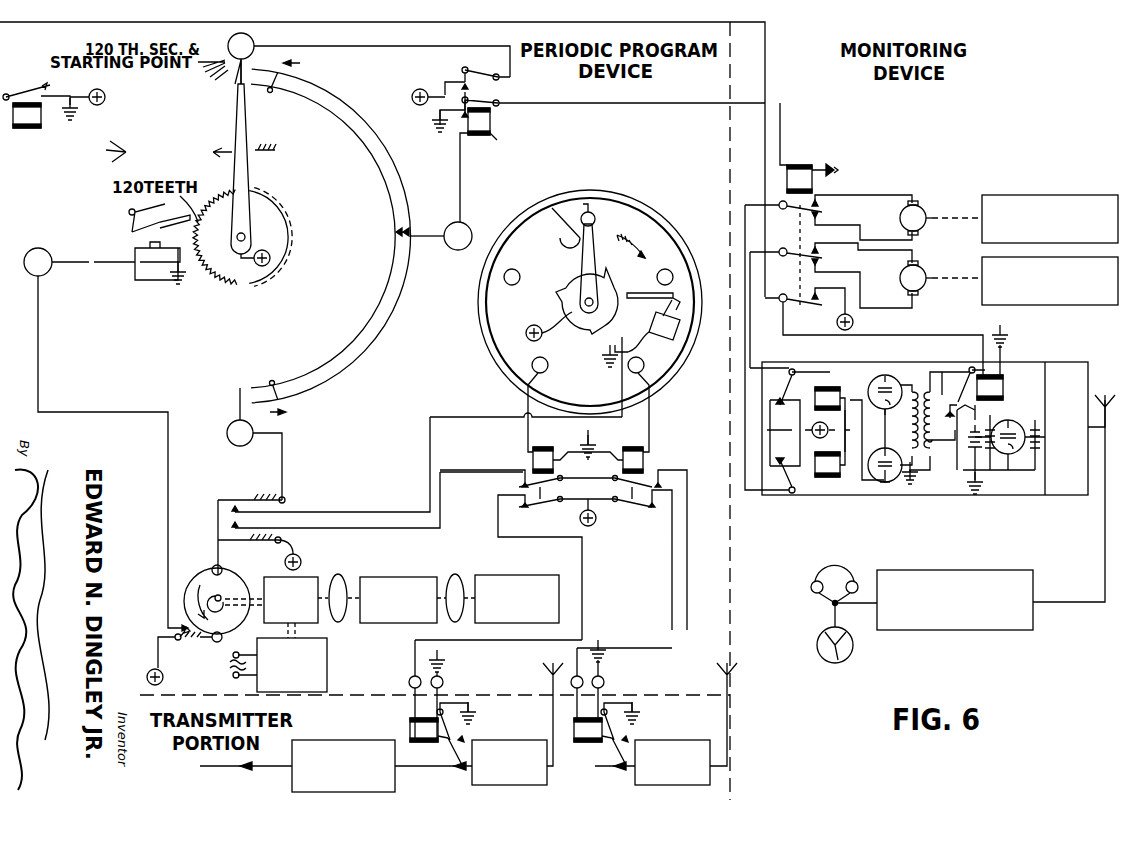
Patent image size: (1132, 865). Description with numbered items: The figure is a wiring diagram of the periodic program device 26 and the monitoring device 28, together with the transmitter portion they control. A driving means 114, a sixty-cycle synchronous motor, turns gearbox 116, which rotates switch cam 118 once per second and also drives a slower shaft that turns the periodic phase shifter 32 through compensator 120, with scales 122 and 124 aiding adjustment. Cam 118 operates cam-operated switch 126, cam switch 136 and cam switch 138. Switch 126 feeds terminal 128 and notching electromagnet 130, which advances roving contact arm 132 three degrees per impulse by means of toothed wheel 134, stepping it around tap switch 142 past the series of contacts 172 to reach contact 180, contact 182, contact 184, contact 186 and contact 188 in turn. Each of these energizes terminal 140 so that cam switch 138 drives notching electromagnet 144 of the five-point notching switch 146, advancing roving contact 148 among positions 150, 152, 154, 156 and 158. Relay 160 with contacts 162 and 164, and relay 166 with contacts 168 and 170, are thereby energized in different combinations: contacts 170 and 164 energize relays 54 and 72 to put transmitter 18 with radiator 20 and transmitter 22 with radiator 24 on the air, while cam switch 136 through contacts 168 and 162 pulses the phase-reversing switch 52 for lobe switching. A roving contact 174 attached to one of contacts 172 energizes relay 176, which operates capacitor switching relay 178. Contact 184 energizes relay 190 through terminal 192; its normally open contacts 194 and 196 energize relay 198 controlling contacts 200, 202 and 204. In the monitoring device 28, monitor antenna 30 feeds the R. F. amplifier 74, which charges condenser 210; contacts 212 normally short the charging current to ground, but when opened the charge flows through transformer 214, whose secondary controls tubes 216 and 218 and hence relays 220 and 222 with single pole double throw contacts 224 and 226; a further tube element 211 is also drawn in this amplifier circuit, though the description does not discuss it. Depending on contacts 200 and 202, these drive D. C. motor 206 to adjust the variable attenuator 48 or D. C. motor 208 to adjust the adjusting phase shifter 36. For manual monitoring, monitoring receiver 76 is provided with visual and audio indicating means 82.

The transmitter 18 is at (490, 740).
The radiator 20 is at (545, 709).
The transmitter 22 is at (664, 740).
The radiator 24 is at (700, 709).
The periodic program device 26 is at (625, 99).
The monitoring device 28 is at (922, 106).
The monitor antenna 30 is at (1095, 332).
The periodic phase shifter 32 is at (506, 575).
The adjusting phase shifter 36 is at (982, 271).
The variable attenuator 48 is at (1024, 195).
The phase-reversing switch 52 is at (368, 740).
The relay 54 is at (435, 736).
The relay 72 is at (621, 705).
The monitoring R. F. amplifier 74 is at (1078, 362).
The monitoring receiver 76 is at (967, 570).
The visual and audio indicating means 82 is at (839, 614).
The driving means 114 is at (257, 684).
The gearbox 116 is at (300, 577).
The switch cam 118 is at (200, 583).
The compensator 120 is at (396, 577).
The scale 122 is at (339, 575).
The scale 124 is at (456, 575).
The cam-operated switch 126 is at (179, 656).
The terminal 128 is at (106, 439).
The notching electromagnet 130 is at (130, 249).
The roving contact arm 132 is at (246, 184).
The toothed wheel 134 is at (264, 214).
The cam switch 136 is at (239, 537).
The cam switch 138 is at (248, 494).
The terminal 140 is at (368, 266).
The tap switch 142 is at (314, 304).
The notching electromagnet 144 is at (680, 330).
The five-point notching switch 146 is at (565, 193).
The roving contact 148 is at (582, 274).
The contact position 150 is at (594, 218).
The contact position 152 is at (670, 273).
The contact position 154 is at (644, 368).
The contact position 156 is at (558, 360).
The contact position 158 is at (504, 277).
The relay 160 is at (440, 476).
The contacts 162 is at (585, 492).
The contacts 164 is at (605, 513).
The relay 166 is at (429, 462).
The contacts 168 is at (563, 550).
The contacts 170 is at (570, 560).
The contacts 172 is at (130, 157).
The roving contact 174 is at (62, 118).
The relay 176 is at (36, 128).
The capacitor switching relay 178 is at (1003, 388).
The contact 180 is at (238, 388).
The contact 182 is at (271, 380).
The contact 184 is at (385, 245).
The contact 186 is at (302, 102).
The contact 188 is at (236, 95).
The relay 190 is at (479, 165).
The terminal 192 is at (449, 236).
The normally open contact 194 is at (463, 70).
The normally open contact 196 is at (584, 110).
The relay 198 is at (806, 165).
The contact 200 is at (828, 339).
The contact 202 is at (831, 305).
The contact 204 is at (874, 331).
The D. C. motor 206 is at (930, 212).
The D. C. motor 208 is at (926, 286).
The condenser 210 is at (989, 449).
The tube 211 is at (1016, 424).
The contacts 212 is at (969, 366).
The transformer 214 is at (930, 395).
The tube 216 is at (868, 387).
The tube 218 is at (890, 481).
The relay 220 is at (820, 387).
The relay 222 is at (826, 477).
The single pole double throw contacts 224 is at (793, 369).
The single pole double throw contacts 226 is at (790, 493).